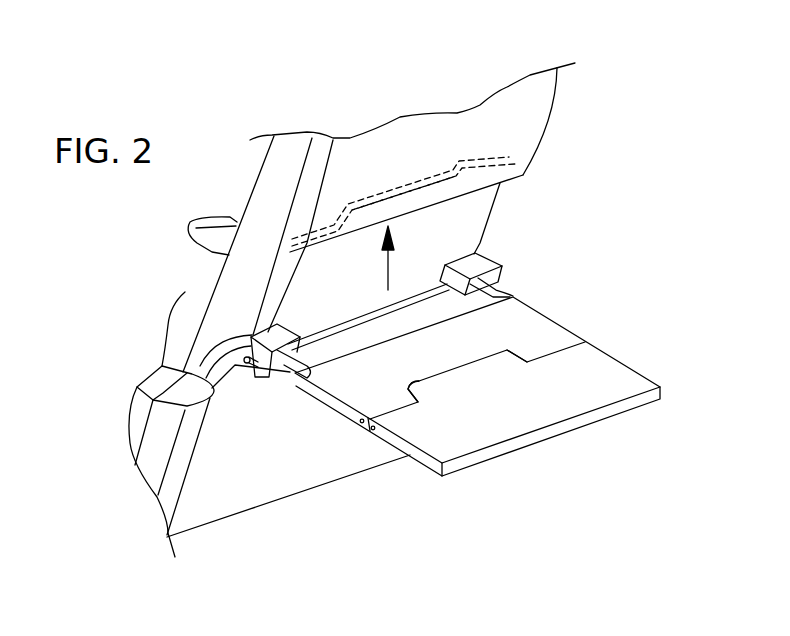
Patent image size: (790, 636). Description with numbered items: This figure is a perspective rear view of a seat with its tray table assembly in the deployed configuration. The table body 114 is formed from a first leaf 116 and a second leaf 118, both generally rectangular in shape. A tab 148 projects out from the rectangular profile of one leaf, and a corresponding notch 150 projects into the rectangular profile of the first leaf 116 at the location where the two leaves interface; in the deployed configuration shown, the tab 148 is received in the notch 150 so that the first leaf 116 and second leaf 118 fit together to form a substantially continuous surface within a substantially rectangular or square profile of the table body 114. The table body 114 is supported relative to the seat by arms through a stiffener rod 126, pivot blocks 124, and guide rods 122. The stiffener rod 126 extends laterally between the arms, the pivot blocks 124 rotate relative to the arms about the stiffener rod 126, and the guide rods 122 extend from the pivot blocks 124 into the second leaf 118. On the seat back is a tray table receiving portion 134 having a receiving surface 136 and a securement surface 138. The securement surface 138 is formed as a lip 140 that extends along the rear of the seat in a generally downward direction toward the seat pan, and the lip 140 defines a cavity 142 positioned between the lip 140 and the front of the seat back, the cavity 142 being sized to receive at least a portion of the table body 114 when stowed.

The table body 114 is at (490, 368).
The first leaf 116 is at (593, 358).
The second leaf 118 is at (555, 333).
The guide rods 122 is at (290, 372).
The pivot blocks 124 is at (256, 375).
The stiffener rod 126 is at (400, 305).
The tray table receiving portion 134 is at (530, 202).
The receiving surface 136 is at (310, 293).
The securement surface 138 is at (388, 280).
The lip 140 is at (425, 208).
The cavity 142 is at (410, 189).
The tab 148 is at (462, 373).
The notch 150 is at (447, 371).